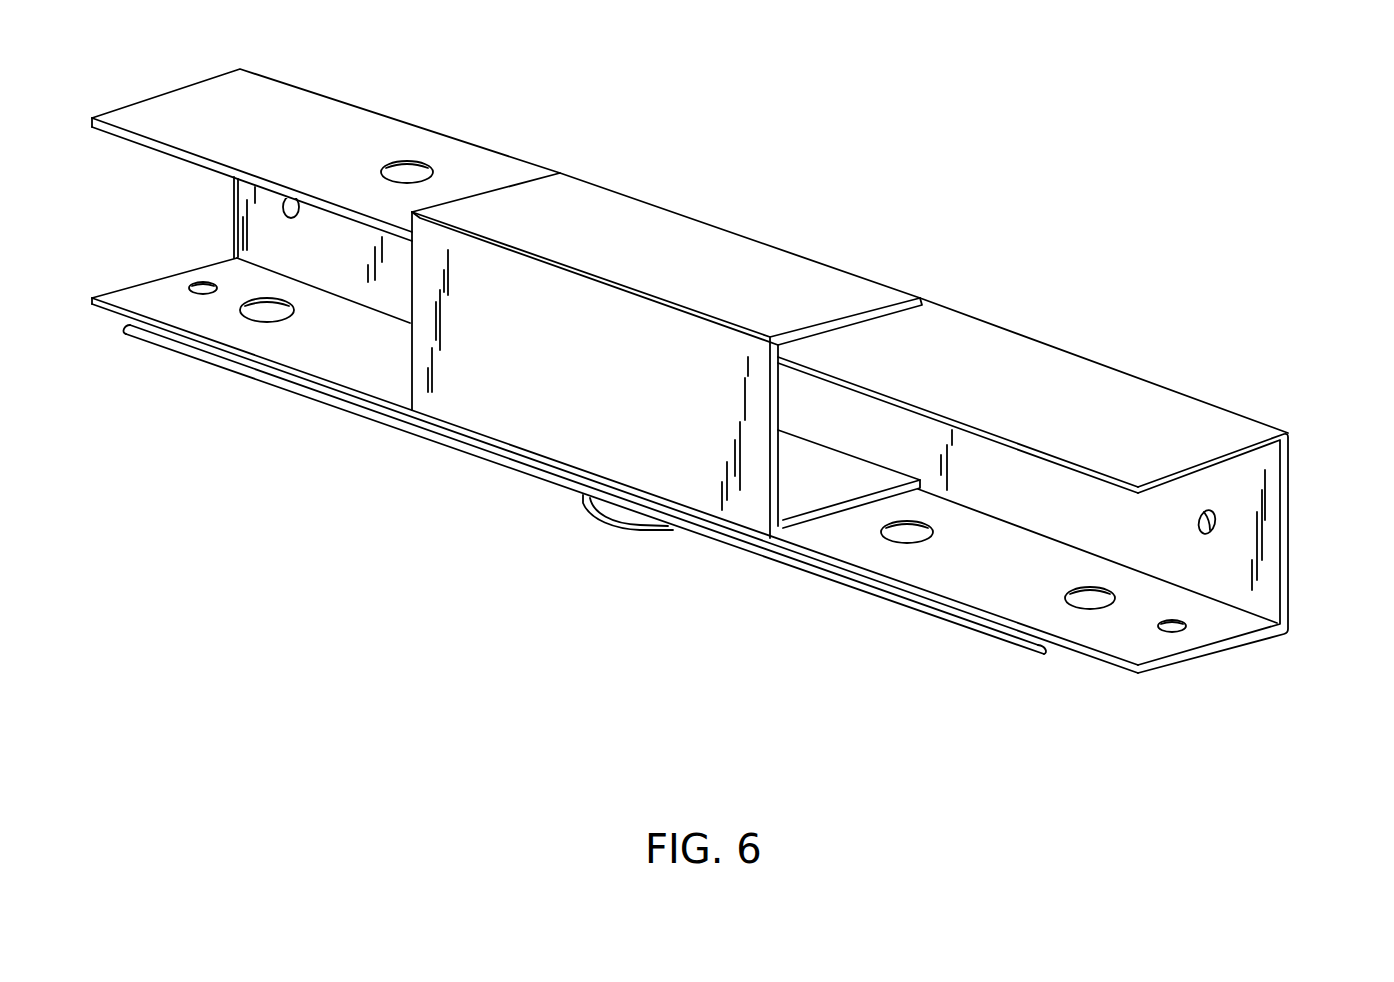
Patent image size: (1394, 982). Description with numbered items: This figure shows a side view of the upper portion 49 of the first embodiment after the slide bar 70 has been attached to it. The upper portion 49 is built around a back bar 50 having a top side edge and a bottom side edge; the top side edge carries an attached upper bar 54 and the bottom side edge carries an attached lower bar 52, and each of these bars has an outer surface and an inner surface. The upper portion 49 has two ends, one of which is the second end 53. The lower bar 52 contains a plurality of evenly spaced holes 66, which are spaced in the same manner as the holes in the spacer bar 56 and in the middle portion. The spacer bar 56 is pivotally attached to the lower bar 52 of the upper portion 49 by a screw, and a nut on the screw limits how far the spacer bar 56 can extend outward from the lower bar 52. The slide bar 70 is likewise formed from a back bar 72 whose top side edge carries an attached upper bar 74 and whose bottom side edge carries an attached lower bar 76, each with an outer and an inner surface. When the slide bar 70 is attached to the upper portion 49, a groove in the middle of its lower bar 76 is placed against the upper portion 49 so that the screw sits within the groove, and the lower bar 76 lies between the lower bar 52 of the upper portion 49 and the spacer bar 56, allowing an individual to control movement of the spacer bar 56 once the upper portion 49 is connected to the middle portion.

The upper portion 49 is at (325, 97).
The upper bar 54 is at (120, 140).
The second end 53 is at (233, 215).
The lower bar 52 is at (140, 283).
The holes 66 is at (247, 320).
The spacer bar 56 is at (745, 552).
The slide bar 70 is at (622, 195).
The upper bar 74 is at (753, 257).
The back bar 72 is at (538, 418).
The lower bar 76 is at (818, 525).
The back bar 50 is at (1292, 492).